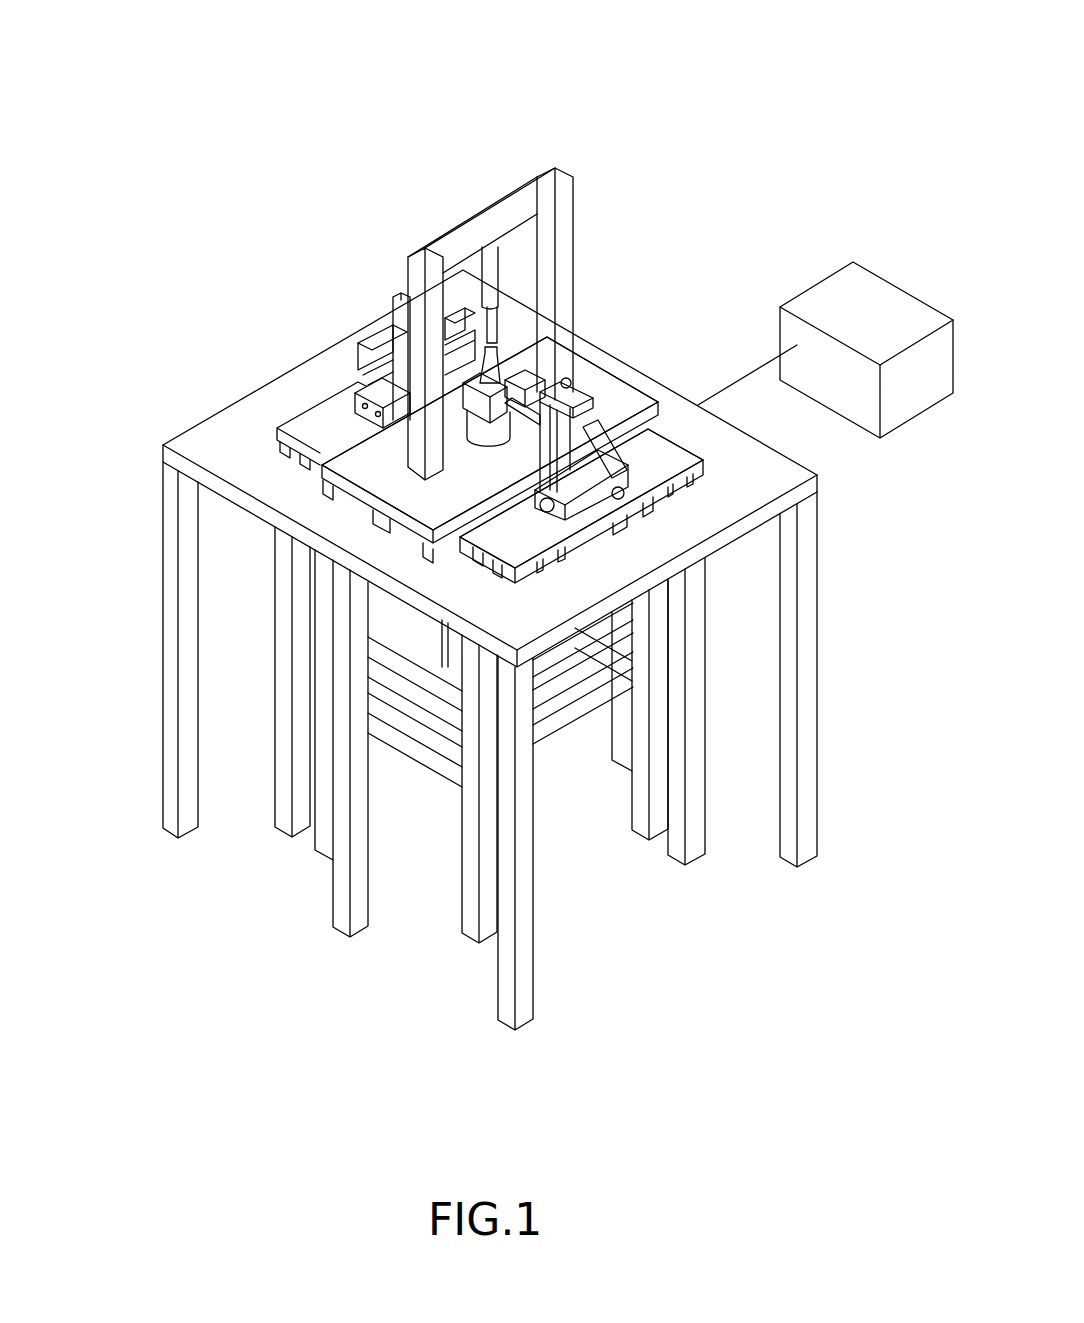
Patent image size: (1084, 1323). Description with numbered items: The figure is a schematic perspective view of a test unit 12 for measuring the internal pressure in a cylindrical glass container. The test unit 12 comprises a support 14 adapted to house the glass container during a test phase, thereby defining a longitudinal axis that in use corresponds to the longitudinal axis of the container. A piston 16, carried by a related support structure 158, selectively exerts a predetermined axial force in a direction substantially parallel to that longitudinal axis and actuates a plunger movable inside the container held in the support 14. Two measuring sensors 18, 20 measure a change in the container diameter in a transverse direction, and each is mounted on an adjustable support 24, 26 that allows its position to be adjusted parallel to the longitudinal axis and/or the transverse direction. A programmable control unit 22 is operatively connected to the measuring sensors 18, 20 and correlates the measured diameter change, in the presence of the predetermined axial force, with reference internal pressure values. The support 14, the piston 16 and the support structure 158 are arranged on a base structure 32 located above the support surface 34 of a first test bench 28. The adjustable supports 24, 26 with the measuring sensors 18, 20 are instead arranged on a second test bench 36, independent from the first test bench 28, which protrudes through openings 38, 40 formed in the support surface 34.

The test unit 12 is at (742, 197).
The support 14 is at (349, 580).
The piston 16 is at (495, 326).
The measuring sensor 18 is at (461, 317).
The measuring sensor 20 is at (542, 390).
The programmable control unit 22 is at (888, 335).
The adjustable support 24 is at (358, 346).
The adjustable support 26 is at (555, 741).
The first test bench 28 is at (436, 499).
The base structure 32 is at (466, 430).
The support surface 34 is at (757, 473).
The second test bench 36 is at (516, 537).
The through opening 38 is at (293, 458).
The through opening 40 is at (480, 577).
The support structure 158 is at (484, 200).